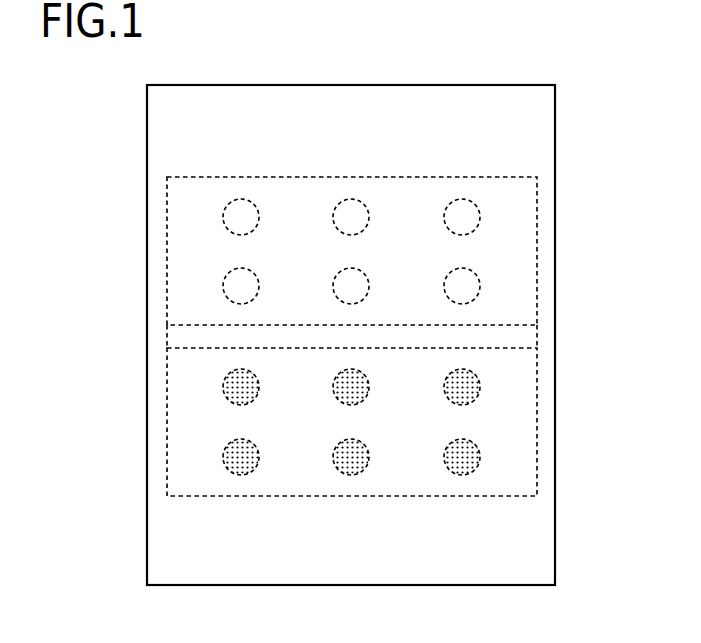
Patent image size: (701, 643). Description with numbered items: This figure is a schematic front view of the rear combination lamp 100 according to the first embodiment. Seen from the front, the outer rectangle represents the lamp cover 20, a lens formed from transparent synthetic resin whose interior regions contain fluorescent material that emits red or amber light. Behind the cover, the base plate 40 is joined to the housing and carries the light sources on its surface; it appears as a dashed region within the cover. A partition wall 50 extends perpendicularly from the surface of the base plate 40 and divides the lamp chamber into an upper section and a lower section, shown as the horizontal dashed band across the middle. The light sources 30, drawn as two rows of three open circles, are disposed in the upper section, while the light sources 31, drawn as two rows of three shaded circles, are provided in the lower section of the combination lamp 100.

The rear combination lamp 100 is at (545, 631).
The lamp cover 20 is at (165, 143).
The light sources 30 is at (232, 212).
The light sources 31 is at (227, 450).
The base plate 40 is at (513, 287).
The partition wall 50 is at (517, 337).